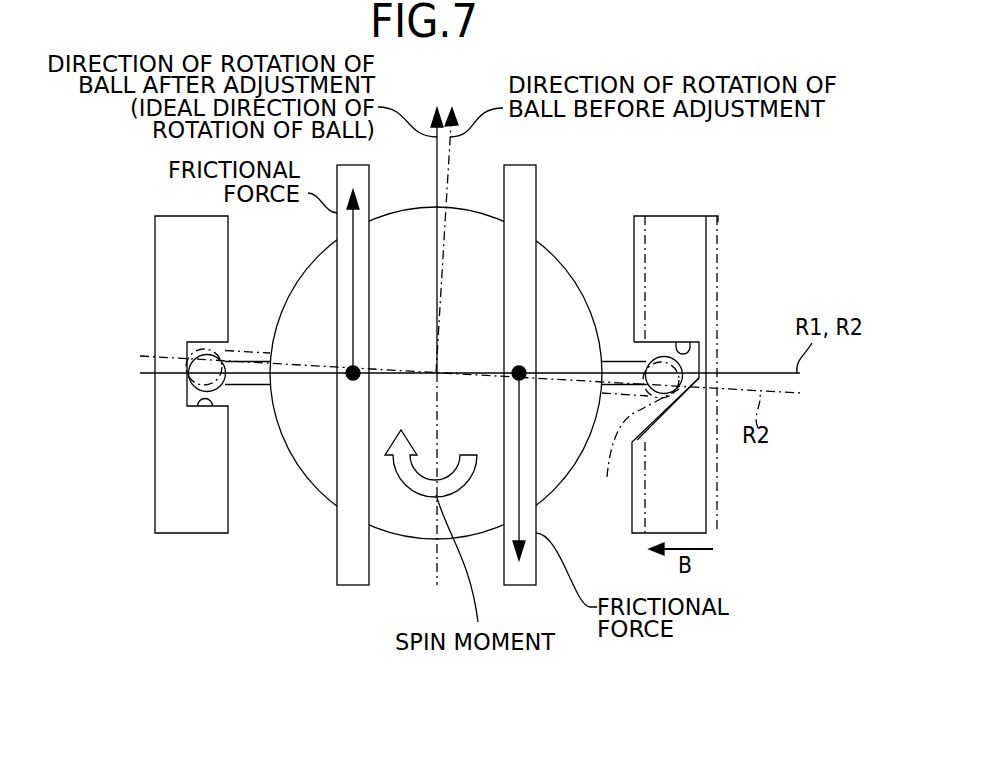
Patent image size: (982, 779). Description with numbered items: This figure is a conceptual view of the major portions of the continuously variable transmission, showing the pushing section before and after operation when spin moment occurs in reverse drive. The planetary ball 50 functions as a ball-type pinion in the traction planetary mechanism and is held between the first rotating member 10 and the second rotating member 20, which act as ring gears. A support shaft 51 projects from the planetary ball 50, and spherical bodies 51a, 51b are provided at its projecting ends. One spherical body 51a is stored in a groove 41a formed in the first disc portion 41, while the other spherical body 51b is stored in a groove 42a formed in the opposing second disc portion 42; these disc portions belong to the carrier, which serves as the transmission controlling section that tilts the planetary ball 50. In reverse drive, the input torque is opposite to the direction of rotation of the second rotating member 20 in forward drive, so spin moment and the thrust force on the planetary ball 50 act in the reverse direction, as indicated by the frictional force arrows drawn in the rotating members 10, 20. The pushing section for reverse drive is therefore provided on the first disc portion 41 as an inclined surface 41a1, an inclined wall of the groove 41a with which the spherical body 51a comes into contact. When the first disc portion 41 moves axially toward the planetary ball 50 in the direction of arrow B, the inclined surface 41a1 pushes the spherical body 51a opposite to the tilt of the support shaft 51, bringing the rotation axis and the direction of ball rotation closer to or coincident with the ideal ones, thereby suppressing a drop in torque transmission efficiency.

The first rotating member 10 is at (536, 196).
The second rotating member 20 is at (337, 554).
The first disc portion 41 is at (690, 216).
The groove 41a is at (692, 345).
The inclined surface 41a1 is at (648, 428).
The second disc portion 42 is at (165, 216).
The groove 42a is at (203, 412).
The planetary ball 50 is at (292, 288).
The support shaft 51 is at (256, 355).
The spherical body 51a is at (650, 362).
The spherical body 51b is at (205, 350).